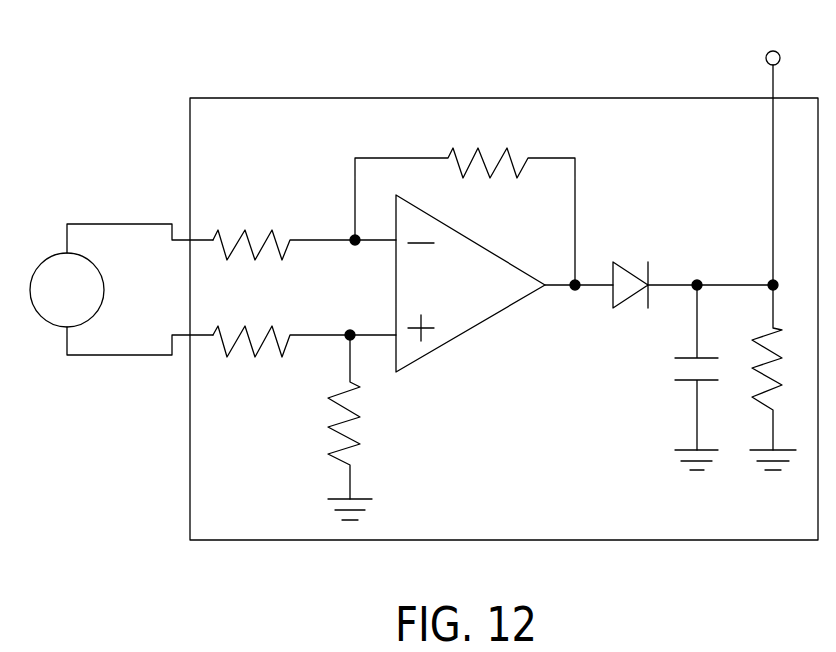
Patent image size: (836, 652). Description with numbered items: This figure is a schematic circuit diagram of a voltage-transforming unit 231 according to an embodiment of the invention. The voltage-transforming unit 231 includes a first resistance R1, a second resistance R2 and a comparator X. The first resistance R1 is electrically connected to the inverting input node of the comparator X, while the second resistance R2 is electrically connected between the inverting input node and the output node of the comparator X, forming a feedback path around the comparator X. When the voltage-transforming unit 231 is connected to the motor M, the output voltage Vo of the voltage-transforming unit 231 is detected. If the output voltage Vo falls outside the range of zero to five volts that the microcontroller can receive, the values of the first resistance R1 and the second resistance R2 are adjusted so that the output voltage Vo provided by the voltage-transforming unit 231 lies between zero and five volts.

The voltage-transforming unit 231 is at (232, 97).
The motor M is at (42, 262).
The first resistance R1 is at (304, 231).
The second resistance R2 is at (465, 199).
The comparator X is at (477, 323).
The output voltage Vo is at (774, 154).